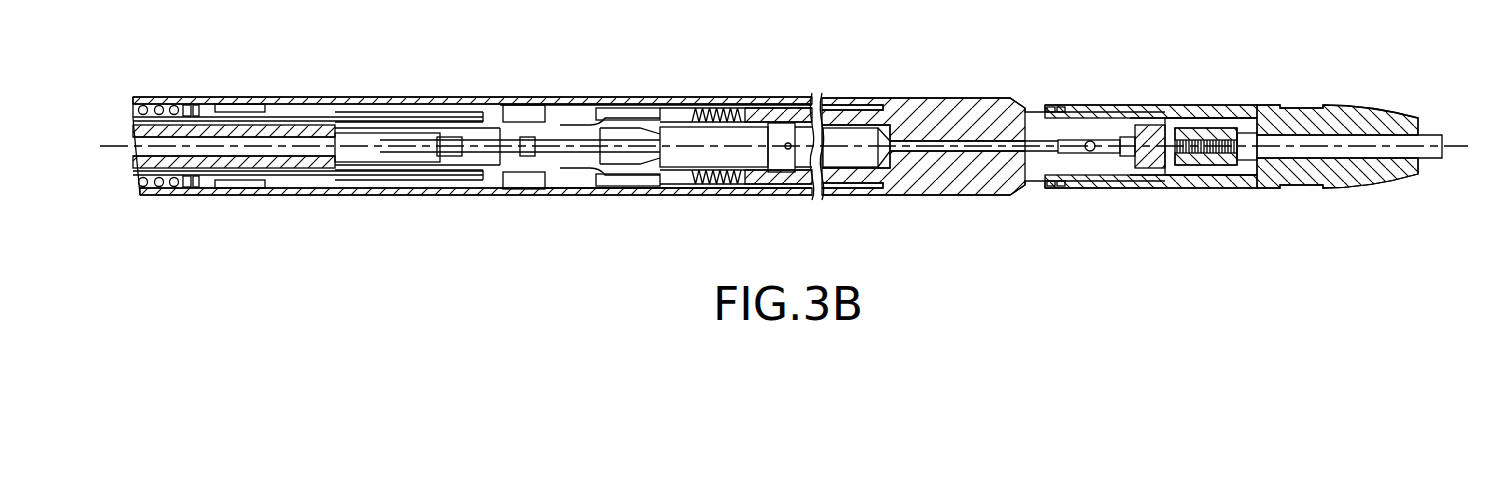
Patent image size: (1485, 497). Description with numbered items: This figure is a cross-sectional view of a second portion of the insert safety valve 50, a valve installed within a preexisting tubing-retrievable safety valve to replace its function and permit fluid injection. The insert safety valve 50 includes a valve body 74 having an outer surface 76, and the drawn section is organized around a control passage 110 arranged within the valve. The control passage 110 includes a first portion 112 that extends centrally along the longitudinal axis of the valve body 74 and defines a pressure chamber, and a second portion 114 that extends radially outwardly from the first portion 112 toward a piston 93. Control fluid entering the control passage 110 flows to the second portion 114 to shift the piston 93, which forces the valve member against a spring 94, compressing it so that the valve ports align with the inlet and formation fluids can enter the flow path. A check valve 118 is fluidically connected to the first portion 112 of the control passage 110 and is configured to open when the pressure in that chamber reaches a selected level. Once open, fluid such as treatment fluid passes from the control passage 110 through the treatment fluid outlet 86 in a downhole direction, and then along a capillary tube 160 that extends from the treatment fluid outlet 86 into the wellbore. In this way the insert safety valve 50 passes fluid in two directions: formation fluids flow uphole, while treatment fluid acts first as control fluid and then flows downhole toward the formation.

The insert safety valve 50 is at (1211, 226).
The valve body 74 is at (711, 95).
The outer surface 76 is at (777, 100).
The treatment fluid outlet 86 is at (1390, 158).
The piston 93 is at (310, 115).
The spring 94 is at (138, 108).
The control passage 110 is at (226, 142).
The first portion 112 is at (855, 137).
The second portion 114 is at (533, 141).
The check valve 118 is at (1075, 140).
The capillary tube 160 is at (1433, 130).